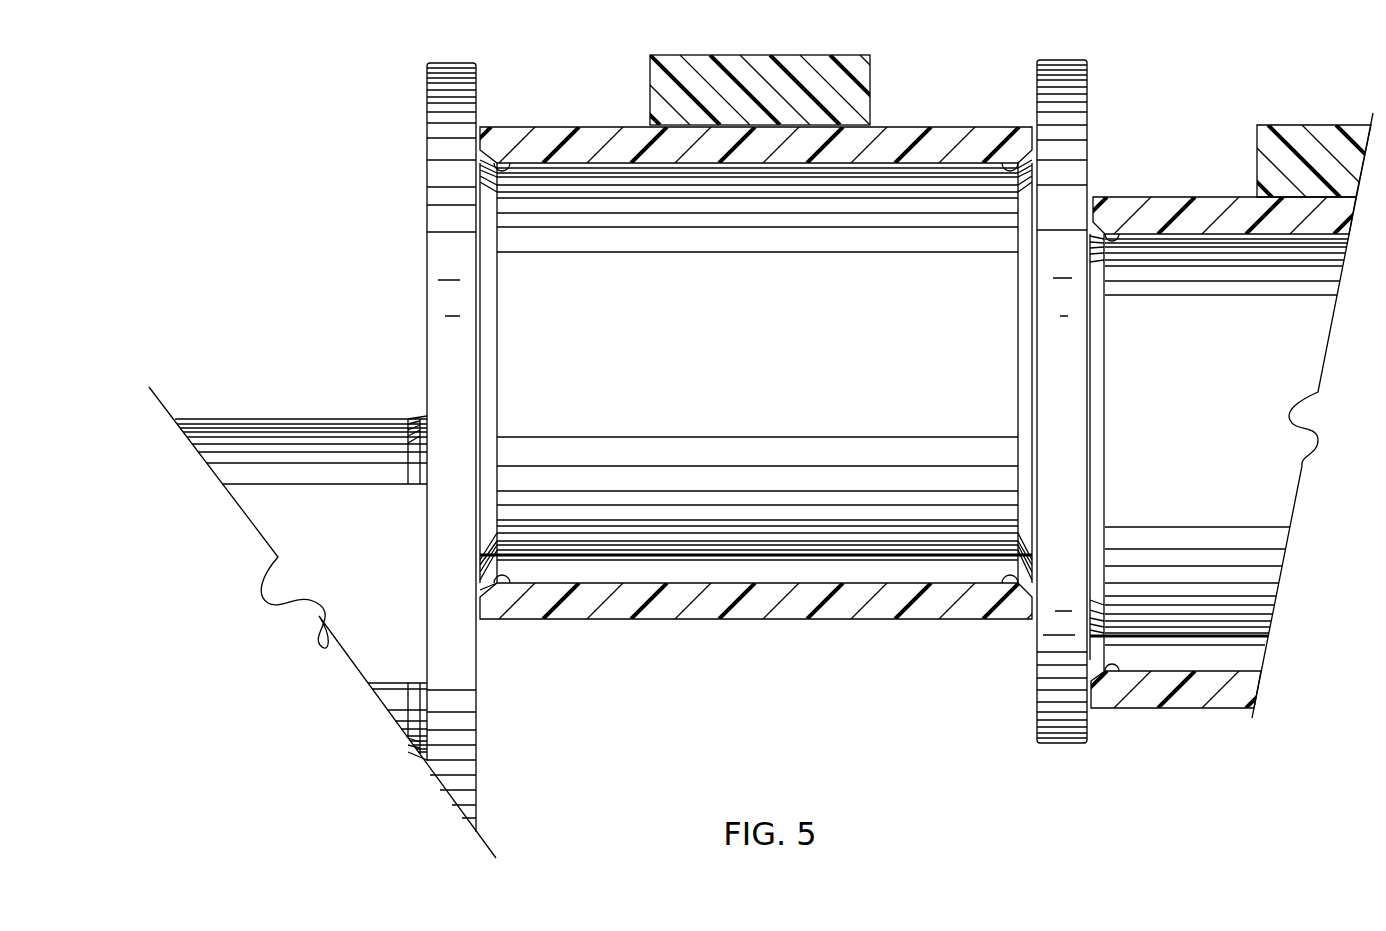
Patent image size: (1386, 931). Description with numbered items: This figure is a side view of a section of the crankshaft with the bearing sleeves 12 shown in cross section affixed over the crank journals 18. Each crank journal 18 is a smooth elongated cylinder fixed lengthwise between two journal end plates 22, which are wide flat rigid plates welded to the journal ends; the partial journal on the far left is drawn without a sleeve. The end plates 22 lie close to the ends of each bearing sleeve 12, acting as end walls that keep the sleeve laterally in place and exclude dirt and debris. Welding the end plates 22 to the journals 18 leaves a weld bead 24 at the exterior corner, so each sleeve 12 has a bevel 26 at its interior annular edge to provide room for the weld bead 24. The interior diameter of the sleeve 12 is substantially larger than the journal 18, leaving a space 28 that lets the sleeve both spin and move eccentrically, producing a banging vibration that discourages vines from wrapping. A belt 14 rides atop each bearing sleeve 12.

The bearing sleeve 12 is at (888, 126).
The belt 14 is at (712, 55).
The crank journal 18 is at (548, 242).
The journal end plate 22 is at (426, 203).
The weld bead 24 is at (486, 150).
The bevel 26 is at (1022, 150).
The space 28 is at (765, 565).